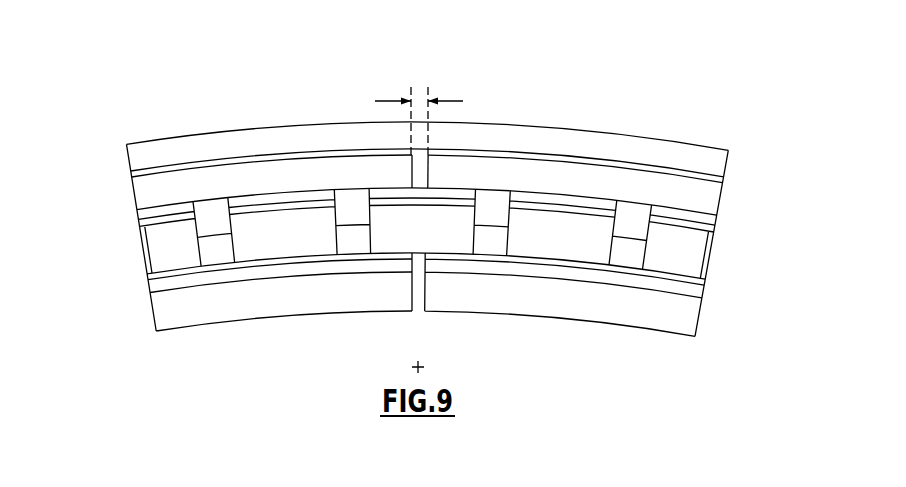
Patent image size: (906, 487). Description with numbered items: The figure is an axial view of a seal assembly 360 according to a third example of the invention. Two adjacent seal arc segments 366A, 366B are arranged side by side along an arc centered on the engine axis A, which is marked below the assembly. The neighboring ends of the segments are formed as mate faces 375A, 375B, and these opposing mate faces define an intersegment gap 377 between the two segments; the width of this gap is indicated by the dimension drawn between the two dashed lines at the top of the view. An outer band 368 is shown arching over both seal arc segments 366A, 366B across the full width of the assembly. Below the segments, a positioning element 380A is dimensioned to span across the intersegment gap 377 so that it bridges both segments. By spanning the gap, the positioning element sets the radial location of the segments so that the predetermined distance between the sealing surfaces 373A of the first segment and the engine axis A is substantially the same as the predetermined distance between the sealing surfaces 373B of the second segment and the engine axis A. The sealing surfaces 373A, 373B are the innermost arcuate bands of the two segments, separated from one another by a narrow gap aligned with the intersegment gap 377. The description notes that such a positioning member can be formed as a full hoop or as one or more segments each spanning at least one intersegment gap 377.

The seal assembly 360 is at (124, 153).
The outer back iron band 368 is at (183, 137).
The seal arc segment 366A is at (133, 196).
The seal arc segment 366B is at (720, 203).
The mate face 375A is at (411, 170).
The mate face 375B is at (428, 170).
The intersegment gap 377 is at (388, 100).
The coil/tooth layer 380A is at (139, 221).
The sealing surfaces 373A is at (243, 322).
The sealing surfaces 373B is at (527, 318).
The engine axis A is at (428, 359).